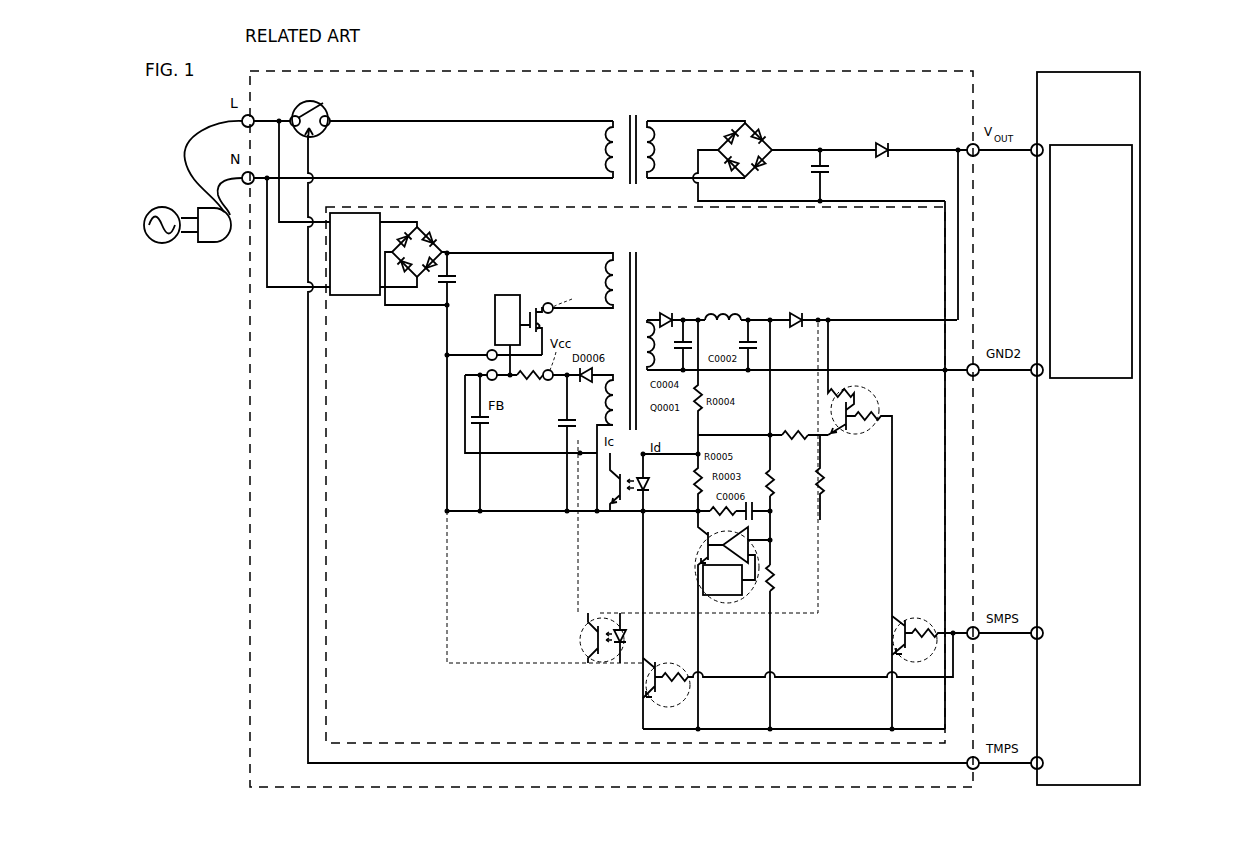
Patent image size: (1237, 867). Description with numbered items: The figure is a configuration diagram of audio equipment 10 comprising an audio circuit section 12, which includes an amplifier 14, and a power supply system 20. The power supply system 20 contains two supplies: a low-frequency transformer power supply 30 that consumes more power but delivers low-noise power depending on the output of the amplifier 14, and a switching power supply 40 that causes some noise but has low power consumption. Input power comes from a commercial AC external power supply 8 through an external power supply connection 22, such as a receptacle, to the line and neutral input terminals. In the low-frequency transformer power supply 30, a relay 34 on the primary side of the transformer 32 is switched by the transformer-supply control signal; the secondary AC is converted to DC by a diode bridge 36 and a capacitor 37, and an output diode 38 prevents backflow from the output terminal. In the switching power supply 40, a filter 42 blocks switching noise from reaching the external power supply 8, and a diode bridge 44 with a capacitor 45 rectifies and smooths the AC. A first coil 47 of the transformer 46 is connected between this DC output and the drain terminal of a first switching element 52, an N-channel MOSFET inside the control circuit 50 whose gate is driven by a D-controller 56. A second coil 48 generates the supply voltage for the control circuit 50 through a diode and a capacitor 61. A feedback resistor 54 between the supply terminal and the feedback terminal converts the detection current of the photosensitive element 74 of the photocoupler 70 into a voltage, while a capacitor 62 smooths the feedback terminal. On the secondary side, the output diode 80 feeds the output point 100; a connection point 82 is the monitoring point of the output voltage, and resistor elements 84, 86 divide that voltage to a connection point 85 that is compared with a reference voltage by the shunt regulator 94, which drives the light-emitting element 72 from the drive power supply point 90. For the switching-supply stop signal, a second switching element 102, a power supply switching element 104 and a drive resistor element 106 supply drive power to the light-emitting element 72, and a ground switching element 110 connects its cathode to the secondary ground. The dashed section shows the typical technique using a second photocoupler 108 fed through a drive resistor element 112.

The external power supply 8 is at (160, 207).
The external power supply connection 22 is at (216, 245).
The relay (S0001) 34 is at (322, 109).
The low-frequency transformer power supply 30 is at (457, 101).
The transformer (T0002) 32 is at (640, 117).
The diode bridge (D0001) 36 is at (752, 172).
The capacitor (C0001) 37 is at (814, 169).
The output diode (D0002) 38 is at (889, 152).
The audio equipment 10 is at (1156, 156).
The audio circuit section 12 is at (1140, 620).
The amplifier 14 is at (1086, 378).
The power supply system 20 is at (250, 608).
The switching power supply 40 is at (369, 729).
The filter 42 is at (366, 297).
The diode bridge (D0004) 44 is at (446, 246).
The capacitor (C0003) 45 is at (451, 285).
The first coil 47 is at (621, 256).
The transformer (T0001) 46 is at (646, 275).
The second coil 48 is at (614, 380).
The control circuit (Q0006) 50 is at (497, 295).
The first switching element 52 is at (543, 319).
The feedback resistor (RPU) 54 is at (538, 380).
The D-controller 56 is at (489, 352).
The capacitor (C0007) 61 is at (565, 432).
The capacitor (C0008) 62 is at (481, 432).
The photocoupler (Q0001) 70 is at (618, 500).
The light-emitting element 72 is at (648, 488).
The photosensitive element 74 is at (612, 500).
The output diode (D0003) 80 is at (799, 327).
The connection point 82 is at (755, 312).
The resistor element (R0001) 84 is at (774, 484).
The connection point 85 is at (773, 540).
The resistor element (R0002) 86 is at (773, 594).
The connection point 90 is at (688, 312).
The shunt regulator (Q0002) 94 is at (698, 568).
The output point 100 is at (832, 311).
The second switching element (Q0004) 102 is at (893, 648).
The power supply switching element (Q0005) 104 is at (847, 432).
The drive resistor element (R0006) 106 is at (795, 432).
The second photocoupler 108 is at (618, 622).
The ground switching element (Q0003) 110 is at (645, 695).
The drive resistor element 112 is at (829, 493).